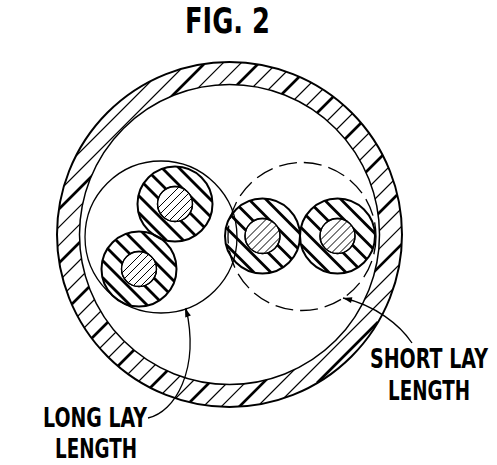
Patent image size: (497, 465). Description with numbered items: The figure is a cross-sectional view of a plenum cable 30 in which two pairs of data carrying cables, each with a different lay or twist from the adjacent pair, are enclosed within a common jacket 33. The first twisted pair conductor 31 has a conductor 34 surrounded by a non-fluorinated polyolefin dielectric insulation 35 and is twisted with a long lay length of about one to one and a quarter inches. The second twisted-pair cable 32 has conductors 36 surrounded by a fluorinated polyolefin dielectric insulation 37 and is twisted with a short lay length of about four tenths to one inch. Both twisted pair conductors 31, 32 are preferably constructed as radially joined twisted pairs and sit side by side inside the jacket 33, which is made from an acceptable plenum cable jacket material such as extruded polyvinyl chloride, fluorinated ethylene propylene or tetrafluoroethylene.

The plenum cable 30 is at (93, 113).
The twisted pair conductor 31 is at (121, 177).
The twisted pair conductor 32 is at (285, 163).
The jacket 33 is at (246, 396).
The conductor 34 is at (160, 173).
The non-fluorinated polyolefin dielectric insulation 35 is at (179, 187).
The conductors 36 is at (297, 210).
The fluorinated polyolefin dielectric insulation 37 is at (319, 262).